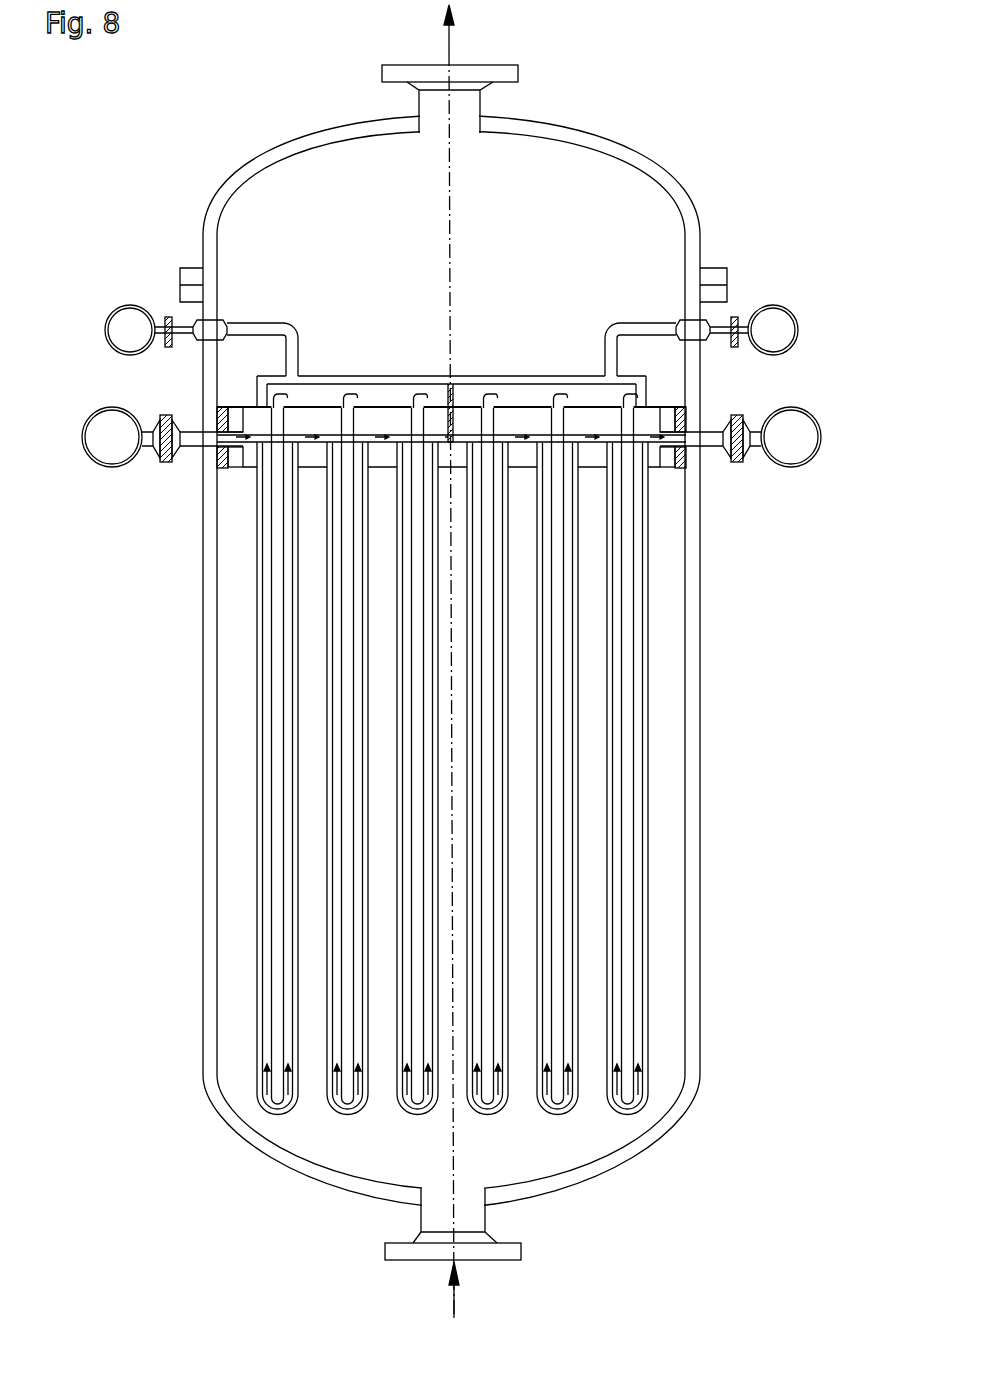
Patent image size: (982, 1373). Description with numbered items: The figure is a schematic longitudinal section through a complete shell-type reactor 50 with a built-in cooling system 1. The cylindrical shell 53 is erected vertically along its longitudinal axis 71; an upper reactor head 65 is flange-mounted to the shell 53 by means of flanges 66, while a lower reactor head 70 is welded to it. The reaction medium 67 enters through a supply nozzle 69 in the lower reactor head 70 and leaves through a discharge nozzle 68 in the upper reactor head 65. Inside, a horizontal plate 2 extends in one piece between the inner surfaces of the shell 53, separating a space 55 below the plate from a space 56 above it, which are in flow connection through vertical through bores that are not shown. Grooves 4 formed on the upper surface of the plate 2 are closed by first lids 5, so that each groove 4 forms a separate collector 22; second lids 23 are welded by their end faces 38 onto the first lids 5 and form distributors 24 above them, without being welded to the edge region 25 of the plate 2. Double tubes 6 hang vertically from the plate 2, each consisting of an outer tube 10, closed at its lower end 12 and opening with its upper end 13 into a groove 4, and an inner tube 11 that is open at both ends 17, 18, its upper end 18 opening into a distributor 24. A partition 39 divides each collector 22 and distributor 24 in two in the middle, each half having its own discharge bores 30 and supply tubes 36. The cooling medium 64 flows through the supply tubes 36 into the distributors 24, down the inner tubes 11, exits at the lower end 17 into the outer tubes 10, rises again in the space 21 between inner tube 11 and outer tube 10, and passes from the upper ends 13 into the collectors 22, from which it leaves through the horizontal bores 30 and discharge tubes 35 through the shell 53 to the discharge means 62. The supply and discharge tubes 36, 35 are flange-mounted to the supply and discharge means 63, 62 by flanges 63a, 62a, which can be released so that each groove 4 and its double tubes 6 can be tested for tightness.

The cooling system 1 is at (551, 269).
The horizontal plate 2 is at (666, 463).
The groove 4 is at (451, 369).
The collector 22 is at (502, 413).
The lid 5 is at (374, 404).
The double tube 6 is at (254, 799).
The outer tube 10 is at (256, 870).
The inner tube 11 is at (262, 935).
The lower end of outer tube 12 is at (551, 1117).
The upper end of outer tube 13 is at (577, 463).
The lower end of inner tube 17 is at (262, 1094).
The upper end of inner tube 18 is at (557, 400).
The space between inner tube and outer tube 21 is at (271, 970).
The second lid 23 is at (352, 403).
The distributor 24 is at (466, 388).
The edge region of plate 25 is at (246, 497).
The discharge bore 30 is at (235, 425).
The discharge tube 35 is at (243, 470).
The supply tube 36 is at (253, 322).
The end face of second lid 38 is at (256, 392).
The partition 39 is at (449, 374).
The shell-type reactor 50 is at (213, 126).
The shell 53 is at (206, 640).
The space below the plate 55 is at (373, 1151).
The space above the plate 56 is at (391, 251).
The discharge means 62 is at (106, 466).
The flange 62a is at (165, 413).
The supply means 63 is at (128, 306).
The flange 63a is at (182, 300).
The cooling medium 64 is at (292, 392).
The upper reactor head 65 is at (601, 142).
The flange 66 is at (722, 268).
The reaction medium 67 is at (454, 50).
The discharge nozzle 68 is at (520, 70).
The supply nozzle 69 is at (385, 1252).
The lower reactor head 70 is at (611, 1187).
The longitudinal axis 71 is at (456, 192).